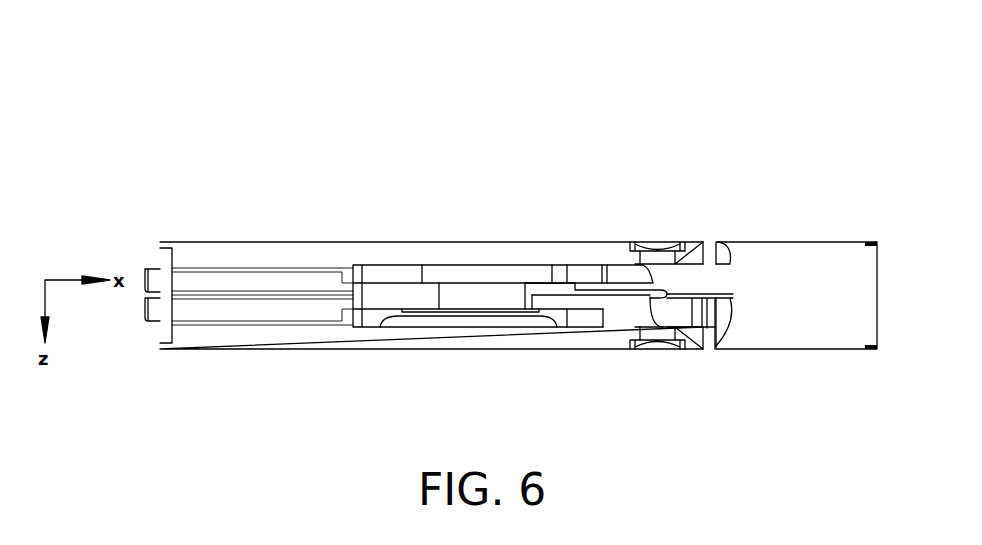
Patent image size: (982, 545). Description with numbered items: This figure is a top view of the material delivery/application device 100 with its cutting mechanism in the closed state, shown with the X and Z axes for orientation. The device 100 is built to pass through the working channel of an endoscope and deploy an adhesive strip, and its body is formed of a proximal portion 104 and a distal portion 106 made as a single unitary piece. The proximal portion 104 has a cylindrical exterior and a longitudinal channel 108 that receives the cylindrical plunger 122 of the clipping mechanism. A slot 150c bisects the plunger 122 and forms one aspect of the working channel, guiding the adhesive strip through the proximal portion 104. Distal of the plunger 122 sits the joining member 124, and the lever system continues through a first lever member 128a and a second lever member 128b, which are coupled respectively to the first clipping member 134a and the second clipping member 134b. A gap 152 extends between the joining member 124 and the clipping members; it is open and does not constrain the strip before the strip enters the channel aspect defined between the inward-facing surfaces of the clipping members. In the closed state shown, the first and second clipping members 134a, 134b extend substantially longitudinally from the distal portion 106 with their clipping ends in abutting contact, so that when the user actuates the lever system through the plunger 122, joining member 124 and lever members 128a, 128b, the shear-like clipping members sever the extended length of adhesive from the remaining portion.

The material delivery/application device 100 is at (510, 250).
The proximal portion 104 is at (419, 275).
The distal portion 106 is at (530, 278).
The channel 108 is at (237, 305).
The plunger 122 is at (275, 310).
The joining member 124 is at (400, 300).
The first lever member 128a is at (492, 273).
The second lever member 128b is at (470, 328).
The first clipping member 134a is at (630, 312).
The second clipping member 134b is at (763, 276).
The slot 150c is at (227, 295).
The gap 152 is at (478, 297).